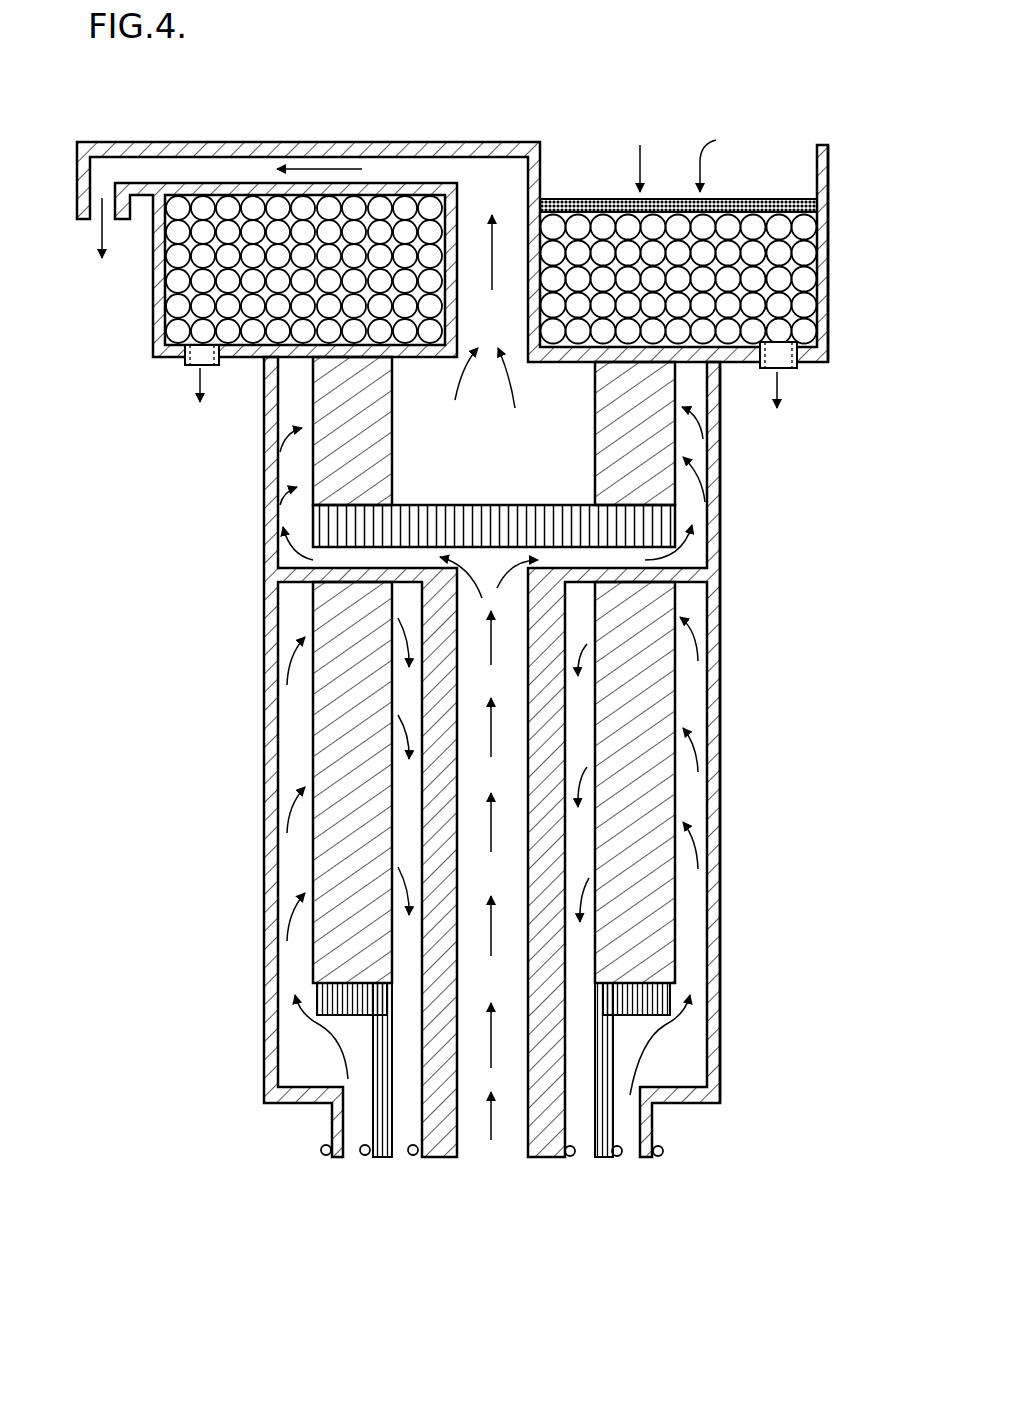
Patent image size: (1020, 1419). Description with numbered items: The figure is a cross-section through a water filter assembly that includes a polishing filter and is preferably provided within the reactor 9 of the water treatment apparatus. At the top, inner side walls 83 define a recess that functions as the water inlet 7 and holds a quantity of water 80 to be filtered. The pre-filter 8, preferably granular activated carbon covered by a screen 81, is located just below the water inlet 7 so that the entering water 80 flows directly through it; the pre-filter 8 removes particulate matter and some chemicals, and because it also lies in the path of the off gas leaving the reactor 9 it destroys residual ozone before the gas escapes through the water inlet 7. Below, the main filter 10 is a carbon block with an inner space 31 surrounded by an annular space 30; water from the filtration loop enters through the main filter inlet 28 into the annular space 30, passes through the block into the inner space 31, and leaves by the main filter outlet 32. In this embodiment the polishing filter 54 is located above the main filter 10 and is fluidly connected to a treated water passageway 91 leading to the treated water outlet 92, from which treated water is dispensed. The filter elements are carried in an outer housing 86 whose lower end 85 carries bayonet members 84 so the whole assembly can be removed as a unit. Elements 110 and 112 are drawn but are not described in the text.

The treated water passageway 91 is at (228, 167).
The treated water outlet 92 is at (92, 203).
The water 80 is at (691, 154).
The water inlet 7 is at (778, 173).
The screen 81 is at (828, 209).
The pre-filter 8 is at (828, 283).
The upper wall section 110 is at (427, 455).
The polishing filter 54 is at (264, 556).
The reactor 9 is at (766, 515).
The outer housing 86 is at (713, 845).
The annular space 30 is at (724, 637).
The inner space 31 is at (715, 707).
The main filter 10 is at (643, 794).
The central flow channel 112 is at (505, 940).
The main filter outlet 32 is at (400, 1140).
The main filter inlet 28 is at (353, 1135).
The lower end 85 is at (573, 1153).
The bayonet members 84 is at (617, 1155).
The inner side walls 83 is at (663, 1153).